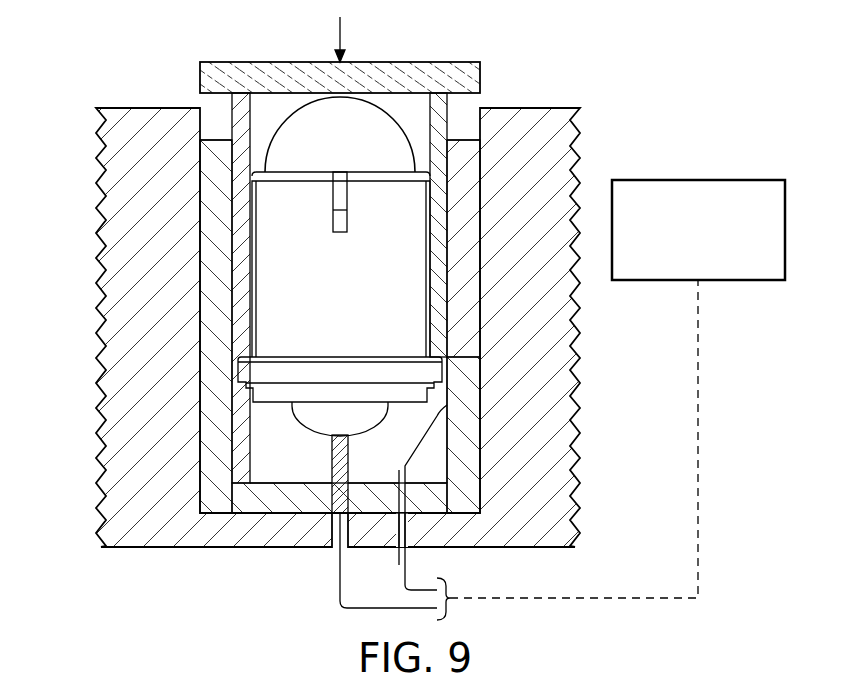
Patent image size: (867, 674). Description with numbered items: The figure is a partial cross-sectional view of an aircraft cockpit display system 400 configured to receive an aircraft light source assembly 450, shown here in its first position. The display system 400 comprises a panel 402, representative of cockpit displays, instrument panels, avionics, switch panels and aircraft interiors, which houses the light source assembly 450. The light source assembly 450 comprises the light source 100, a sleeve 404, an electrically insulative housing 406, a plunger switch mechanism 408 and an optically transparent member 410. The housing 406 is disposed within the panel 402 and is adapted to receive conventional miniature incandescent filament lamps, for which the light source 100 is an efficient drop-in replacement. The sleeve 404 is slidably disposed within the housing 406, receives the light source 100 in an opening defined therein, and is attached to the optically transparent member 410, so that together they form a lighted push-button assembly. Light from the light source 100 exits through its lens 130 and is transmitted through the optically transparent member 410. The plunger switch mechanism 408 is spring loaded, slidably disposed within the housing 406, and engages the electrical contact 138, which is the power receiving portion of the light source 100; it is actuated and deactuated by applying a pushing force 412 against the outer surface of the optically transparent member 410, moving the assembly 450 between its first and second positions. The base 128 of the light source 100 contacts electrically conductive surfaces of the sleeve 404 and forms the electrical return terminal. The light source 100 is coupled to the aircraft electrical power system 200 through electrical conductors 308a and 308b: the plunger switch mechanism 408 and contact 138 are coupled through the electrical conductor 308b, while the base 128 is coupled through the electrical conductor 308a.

The light source 100 is at (402, 192).
The base 128 is at (342, 372).
The lens 130 is at (372, 115).
The electrical contact 138 is at (367, 420).
The aircraft electrical power system 200 is at (726, 178).
The electrical conductor 308a is at (402, 563).
The electrical conductor 308b is at (340, 573).
The aircraft cockpit display system 400 is at (598, 76).
The panel 402 is at (573, 133).
The sleeve 404 is at (236, 128).
The housing 406 is at (213, 440).
The plunger switch mechanism 408 is at (332, 468).
The optically transparent member 410 is at (223, 62).
The pushing force 412 is at (338, 36).
The light source assembly 450 is at (462, 41).